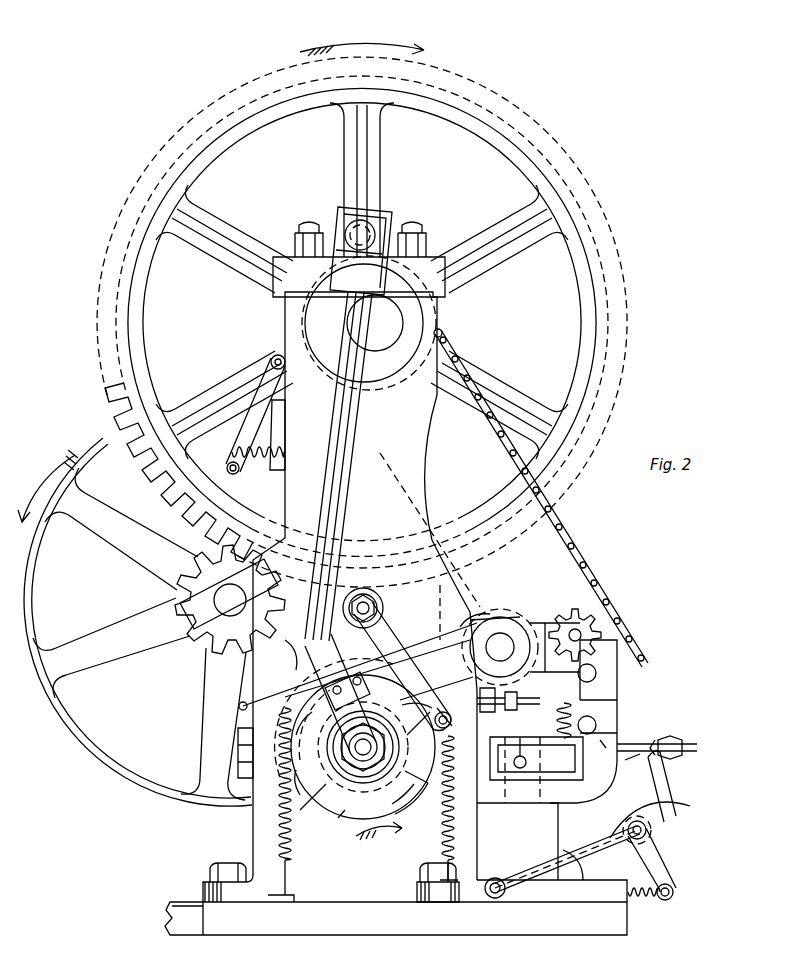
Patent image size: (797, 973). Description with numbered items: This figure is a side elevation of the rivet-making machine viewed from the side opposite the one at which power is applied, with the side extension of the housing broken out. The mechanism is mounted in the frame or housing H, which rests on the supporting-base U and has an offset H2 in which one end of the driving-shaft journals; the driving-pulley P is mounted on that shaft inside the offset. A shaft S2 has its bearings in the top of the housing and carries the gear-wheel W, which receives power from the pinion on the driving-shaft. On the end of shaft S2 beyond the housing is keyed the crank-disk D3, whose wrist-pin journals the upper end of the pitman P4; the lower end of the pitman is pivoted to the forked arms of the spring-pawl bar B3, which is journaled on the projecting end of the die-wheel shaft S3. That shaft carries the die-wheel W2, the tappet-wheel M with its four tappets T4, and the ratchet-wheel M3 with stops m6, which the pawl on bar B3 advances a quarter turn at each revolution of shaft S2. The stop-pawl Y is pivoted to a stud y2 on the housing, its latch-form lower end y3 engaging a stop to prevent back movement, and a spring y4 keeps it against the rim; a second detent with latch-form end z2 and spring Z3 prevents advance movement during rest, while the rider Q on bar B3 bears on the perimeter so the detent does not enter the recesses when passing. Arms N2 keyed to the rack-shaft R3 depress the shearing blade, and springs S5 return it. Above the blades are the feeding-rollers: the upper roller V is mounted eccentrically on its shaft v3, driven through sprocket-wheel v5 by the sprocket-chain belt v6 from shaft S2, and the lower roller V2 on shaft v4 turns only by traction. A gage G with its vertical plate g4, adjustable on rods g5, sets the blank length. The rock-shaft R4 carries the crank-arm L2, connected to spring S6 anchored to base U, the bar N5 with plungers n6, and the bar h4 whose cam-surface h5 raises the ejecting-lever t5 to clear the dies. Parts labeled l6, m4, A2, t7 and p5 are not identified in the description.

The frame or housing H is at (415, 599).
The crank-disk D3 is at (359, 259).
The shaft S2 is at (369, 323).
The connecting rod head block l6 is at (373, 228).
The pitman P4 is at (268, 414).
The sprocket-chain belt v6 is at (612, 612).
The sprocket-wheel v5 is at (517, 489).
The driving-pulley P is at (128, 780).
The gear-wheel W is at (236, 768).
The tappet-wheel M is at (363, 747).
The shaft S3 is at (355, 749).
The ratchet-wheel M3 is at (411, 791).
The tappets T4 is at (365, 765).
The cam surface m4 is at (367, 765).
The stops m6 is at (363, 757).
The spring-pawl bar B3 is at (342, 693).
The stop-pawl Y is at (402, 666).
The stud y2 is at (378, 606).
The lower end of stop-pawl y3 is at (451, 718).
The spring y4 is at (459, 808).
The spring Z3 is at (275, 805).
The latch-form lower end z2 is at (360, 664).
The rider Q is at (237, 705).
The offset H2 is at (279, 655).
The link A2 is at (436, 693).
The rack-shaft R3 is at (522, 625).
The arms N2 is at (555, 647).
The upper feeding-roller V is at (591, 721).
The shaft v3 is at (596, 670).
The lower feeding-roller V2 is at (596, 727).
The shaft v4 is at (609, 752).
The bar N5 is at (684, 730).
The plungers n6 is at (634, 766).
The cam-surface h5 is at (672, 790).
The bar h4 is at (690, 806).
The rock-shaft R4 is at (647, 831).
The crank-arm L2 is at (670, 880).
The spring S6 is at (650, 901).
The rod t7 is at (566, 841).
The ejecting-lever t5 is at (493, 878).
The die-wheel W2 is at (536, 770).
The pin p5 is at (524, 753).
The springs S5 is at (551, 720).
The vertically-placed plate g4 is at (522, 709).
The rods g5 is at (491, 711).
The gage G is at (490, 698).
The supporting-base U is at (396, 918).